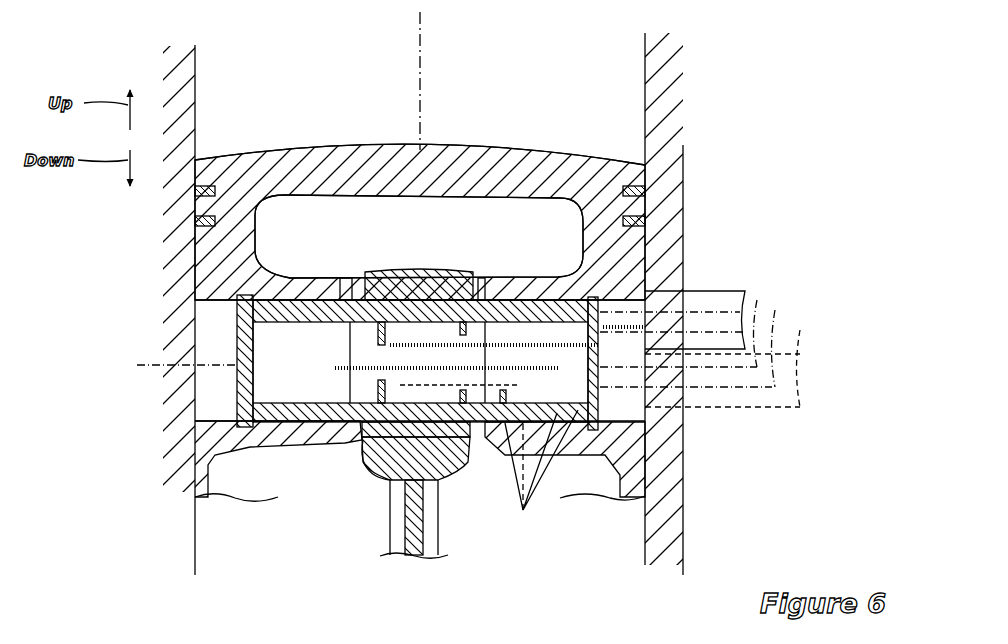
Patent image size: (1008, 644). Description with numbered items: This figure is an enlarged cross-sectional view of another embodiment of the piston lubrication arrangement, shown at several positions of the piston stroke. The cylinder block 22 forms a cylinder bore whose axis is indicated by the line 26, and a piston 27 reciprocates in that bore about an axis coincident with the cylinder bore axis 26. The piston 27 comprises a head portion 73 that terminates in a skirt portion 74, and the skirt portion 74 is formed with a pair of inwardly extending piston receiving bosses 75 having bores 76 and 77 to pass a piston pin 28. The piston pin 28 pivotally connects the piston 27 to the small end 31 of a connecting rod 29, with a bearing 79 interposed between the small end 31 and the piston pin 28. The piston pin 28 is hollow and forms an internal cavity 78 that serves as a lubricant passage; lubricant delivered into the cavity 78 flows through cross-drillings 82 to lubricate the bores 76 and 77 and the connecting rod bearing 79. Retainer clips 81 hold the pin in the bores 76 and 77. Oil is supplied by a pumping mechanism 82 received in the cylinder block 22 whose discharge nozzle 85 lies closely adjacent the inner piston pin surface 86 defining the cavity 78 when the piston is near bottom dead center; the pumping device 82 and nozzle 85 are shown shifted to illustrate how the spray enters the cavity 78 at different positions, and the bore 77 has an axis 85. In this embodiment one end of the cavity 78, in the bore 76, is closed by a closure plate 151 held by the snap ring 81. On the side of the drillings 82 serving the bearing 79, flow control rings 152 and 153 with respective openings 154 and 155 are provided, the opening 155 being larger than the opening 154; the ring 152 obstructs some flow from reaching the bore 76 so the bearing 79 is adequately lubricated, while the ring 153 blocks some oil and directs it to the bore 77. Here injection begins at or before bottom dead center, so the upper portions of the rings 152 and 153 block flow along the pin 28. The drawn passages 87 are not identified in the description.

The cylinder block 22 is at (688, 47).
The cylinder bore axis 26 is at (421, 48).
The piston 27 is at (580, 154).
The piston pin 28 is at (337, 430).
The connecting rod 29 is at (441, 535).
The small end 31 is at (450, 460).
The head portion 73 is at (318, 157).
The skirt portion 74 is at (195, 250).
The piston receiving bosses 75 is at (285, 276).
The bore 76 is at (235, 304).
The bore 77 is at (650, 305).
The internal cavity 78 is at (284, 328).
The bearing 79 is at (380, 452).
The retainer clips 81 is at (233, 313).
The through drillings / pumping mechanism 82 is at (440, 270).
The discharge nozzle 85 is at (150, 367).
The inner piston pin surface 86 is at (286, 427).
The oil passages 87 is at (541, 475).
The closure plate 151 is at (243, 398).
The flow control ring 152 is at (343, 321).
The flow control ring 153 is at (480, 296).
The opening 154 is at (374, 339).
The opening 155 is at (504, 300).